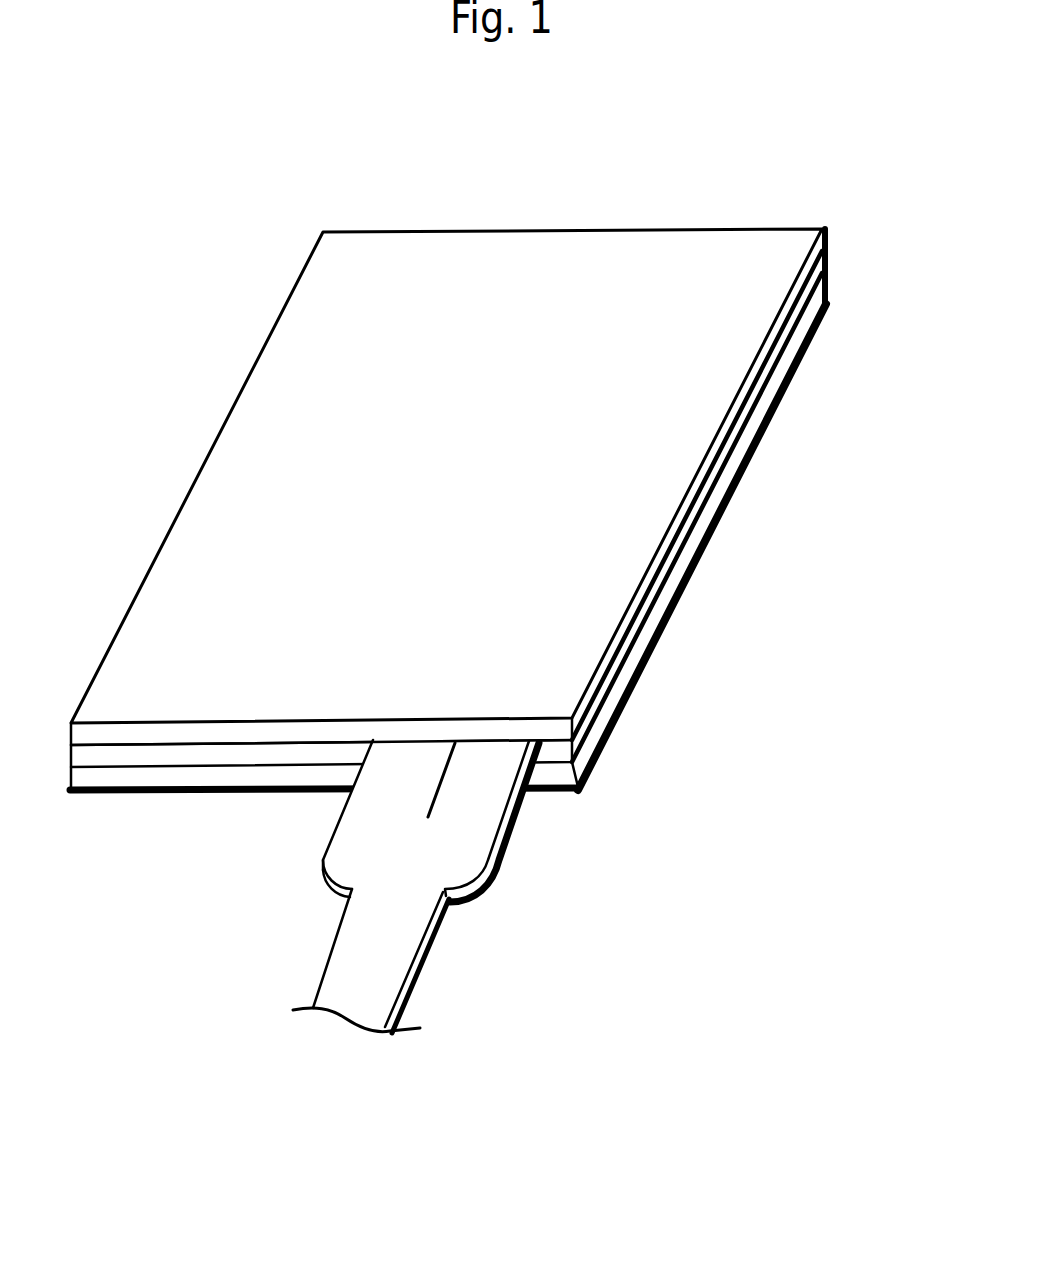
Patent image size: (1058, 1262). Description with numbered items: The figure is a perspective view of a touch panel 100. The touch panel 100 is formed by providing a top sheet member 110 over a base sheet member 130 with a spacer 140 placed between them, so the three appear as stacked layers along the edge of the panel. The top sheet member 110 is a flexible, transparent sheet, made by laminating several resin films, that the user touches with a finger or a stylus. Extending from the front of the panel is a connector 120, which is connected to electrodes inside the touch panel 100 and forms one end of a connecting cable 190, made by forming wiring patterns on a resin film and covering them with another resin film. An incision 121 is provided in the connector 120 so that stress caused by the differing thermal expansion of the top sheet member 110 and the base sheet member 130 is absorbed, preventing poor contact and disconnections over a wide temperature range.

The touch panel 100 is at (515, 229).
The top sheet member 110 is at (826, 228).
The spacer 140 is at (827, 250).
The base sheet member 130 is at (826, 274).
The connector 120 is at (457, 865).
The incision 121 is at (433, 780).
The connecting cable 190 is at (353, 996).